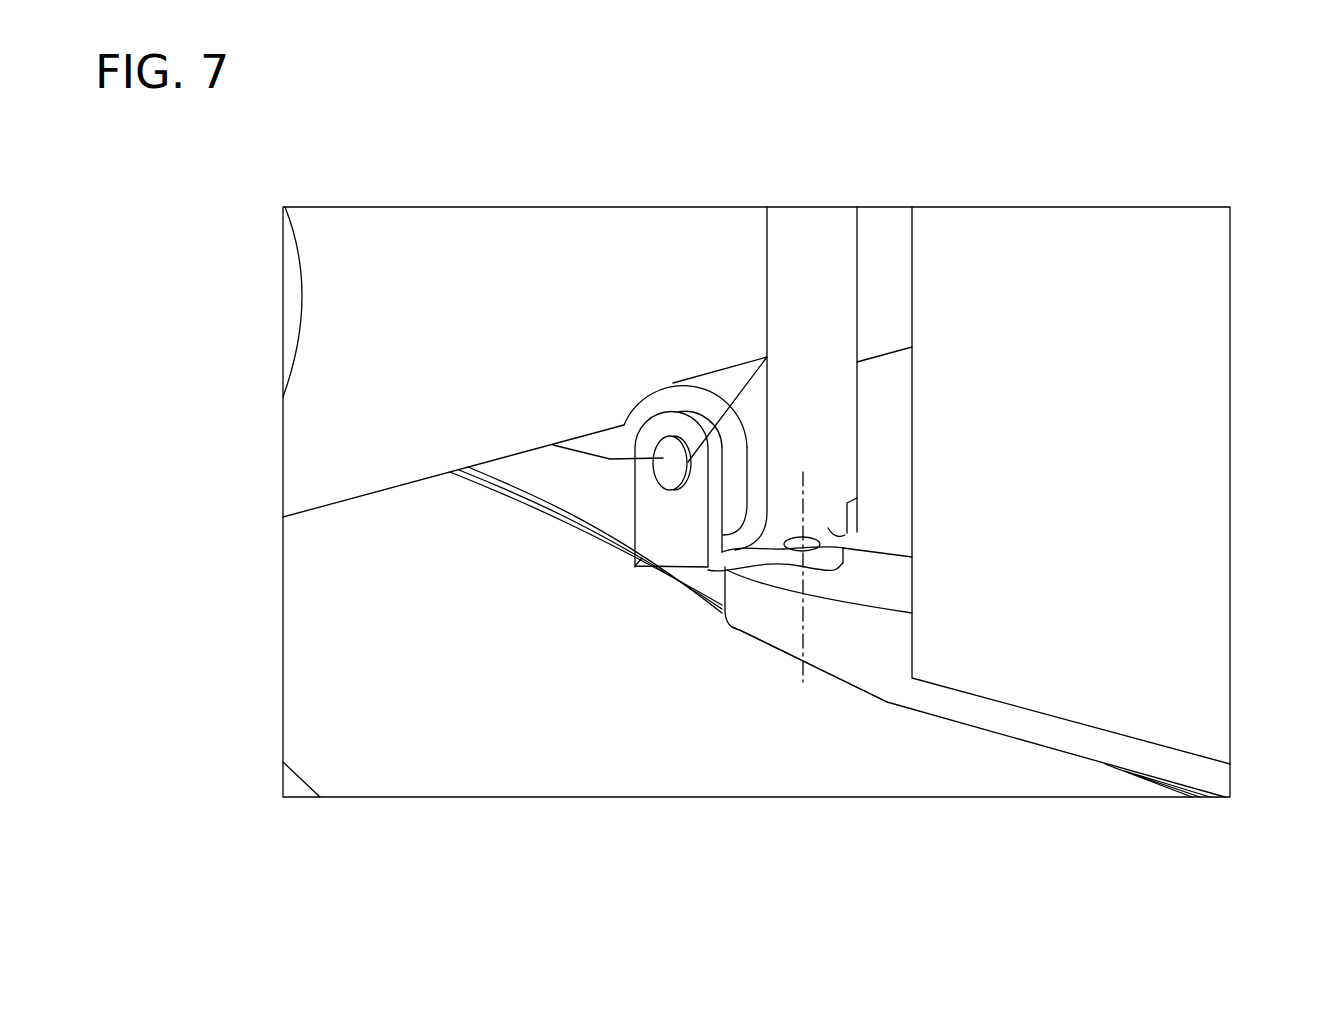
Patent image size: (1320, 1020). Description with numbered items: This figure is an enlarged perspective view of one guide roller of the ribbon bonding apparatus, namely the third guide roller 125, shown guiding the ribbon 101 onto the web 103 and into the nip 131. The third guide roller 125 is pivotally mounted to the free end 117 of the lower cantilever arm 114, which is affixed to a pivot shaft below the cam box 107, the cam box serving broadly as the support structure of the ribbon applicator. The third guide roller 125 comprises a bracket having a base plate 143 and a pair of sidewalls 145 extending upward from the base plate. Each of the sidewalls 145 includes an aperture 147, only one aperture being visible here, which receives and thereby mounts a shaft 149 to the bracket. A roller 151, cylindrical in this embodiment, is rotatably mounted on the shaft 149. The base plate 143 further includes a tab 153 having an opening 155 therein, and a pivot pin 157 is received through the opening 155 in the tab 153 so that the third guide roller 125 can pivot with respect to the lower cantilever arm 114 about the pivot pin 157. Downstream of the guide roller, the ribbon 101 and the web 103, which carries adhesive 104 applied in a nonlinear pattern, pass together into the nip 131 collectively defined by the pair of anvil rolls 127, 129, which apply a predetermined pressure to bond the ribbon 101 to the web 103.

The ribbon 101 is at (845, 232).
The web 103 is at (782, 757).
The adhesive 104 is at (700, 597).
The cam box 107 is at (1173, 640).
The lower cantilever arm 114 is at (850, 682).
The free end 117 is at (737, 618).
The third guide roller 125 is at (642, 558).
The anvil roll 127 is at (342, 332).
The anvil roll 129 is at (293, 783).
The nip 131 is at (345, 513).
The base plate 143 is at (770, 526).
The sidewalls 145 is at (857, 500).
The aperture 147 is at (745, 400).
The shaft 149 is at (634, 455).
The roller 151 is at (712, 382).
The tab 153 is at (847, 563).
The opening 155 is at (817, 558).
The pivot pin 157 is at (830, 528).